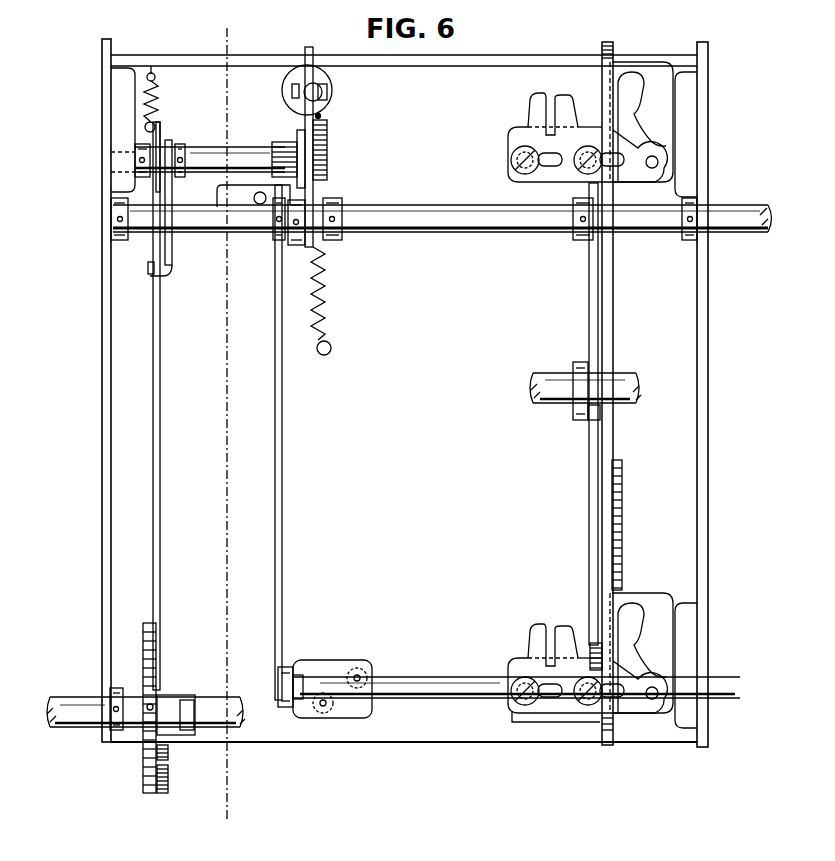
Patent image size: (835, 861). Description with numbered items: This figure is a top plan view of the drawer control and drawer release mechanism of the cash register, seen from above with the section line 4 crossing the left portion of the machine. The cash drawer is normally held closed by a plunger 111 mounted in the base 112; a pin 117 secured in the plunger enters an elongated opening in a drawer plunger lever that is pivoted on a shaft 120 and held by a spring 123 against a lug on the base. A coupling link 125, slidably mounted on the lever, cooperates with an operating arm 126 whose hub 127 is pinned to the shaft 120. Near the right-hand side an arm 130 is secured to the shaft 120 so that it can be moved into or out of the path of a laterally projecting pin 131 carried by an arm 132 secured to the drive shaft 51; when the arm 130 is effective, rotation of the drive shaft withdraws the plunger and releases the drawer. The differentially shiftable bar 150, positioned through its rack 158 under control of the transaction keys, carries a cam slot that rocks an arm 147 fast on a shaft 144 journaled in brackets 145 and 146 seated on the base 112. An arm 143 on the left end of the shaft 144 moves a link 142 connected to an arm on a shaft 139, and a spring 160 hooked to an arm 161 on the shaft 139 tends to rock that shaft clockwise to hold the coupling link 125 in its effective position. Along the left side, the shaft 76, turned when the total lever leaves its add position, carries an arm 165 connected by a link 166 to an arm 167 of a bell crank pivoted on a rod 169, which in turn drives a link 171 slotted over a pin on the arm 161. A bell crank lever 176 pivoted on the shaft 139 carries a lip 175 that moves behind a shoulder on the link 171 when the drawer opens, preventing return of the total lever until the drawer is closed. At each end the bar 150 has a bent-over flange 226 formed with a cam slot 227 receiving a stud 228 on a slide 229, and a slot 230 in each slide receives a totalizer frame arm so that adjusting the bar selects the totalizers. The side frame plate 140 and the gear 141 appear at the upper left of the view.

The section line 4- 4 is at (213, 40).
The drive shaft 51 is at (560, 373).
The shaft 76 is at (92, 697).
The plunger 111 is at (330, 83).
The base 112 is at (455, 744).
The pin 117 is at (328, 94).
The shaft 120 is at (465, 228).
The spring 123 is at (327, 270).
The coupling link 125 is at (322, 130).
The operating arm 126 is at (322, 200).
The hub 127 is at (343, 208).
The arm 130 is at (590, 286).
The pin 131 is at (592, 420).
The arm 132 is at (574, 412).
The shaft 139 is at (266, 152).
The side frame plate 140 is at (108, 95).
The gear 141 is at (290, 140).
The link 142 is at (282, 495).
The arm 143 is at (288, 664).
The shaft 144 is at (452, 677).
The bracket 145 is at (335, 661).
The bracket 146 is at (536, 724).
The arm 147 is at (598, 645).
The differentially shiftable bar 150 is at (613, 429).
The rack 158 is at (624, 500).
The spring 160 is at (155, 92).
The arm 161 is at (156, 128).
The arm 165 is at (143, 752).
The link 166 is at (166, 768).
The arm 167 is at (166, 786).
The rod 169 is at (214, 685).
The link 171 is at (160, 323).
The lip 175 is at (165, 272).
The bell crank lever 176 is at (173, 248).
The bent-over flange 226 is at (667, 66).
The cam slot 227 is at (634, 101).
The stud 228 is at (648, 165).
The slide 229 is at (569, 178).
The slot 230 is at (544, 96).